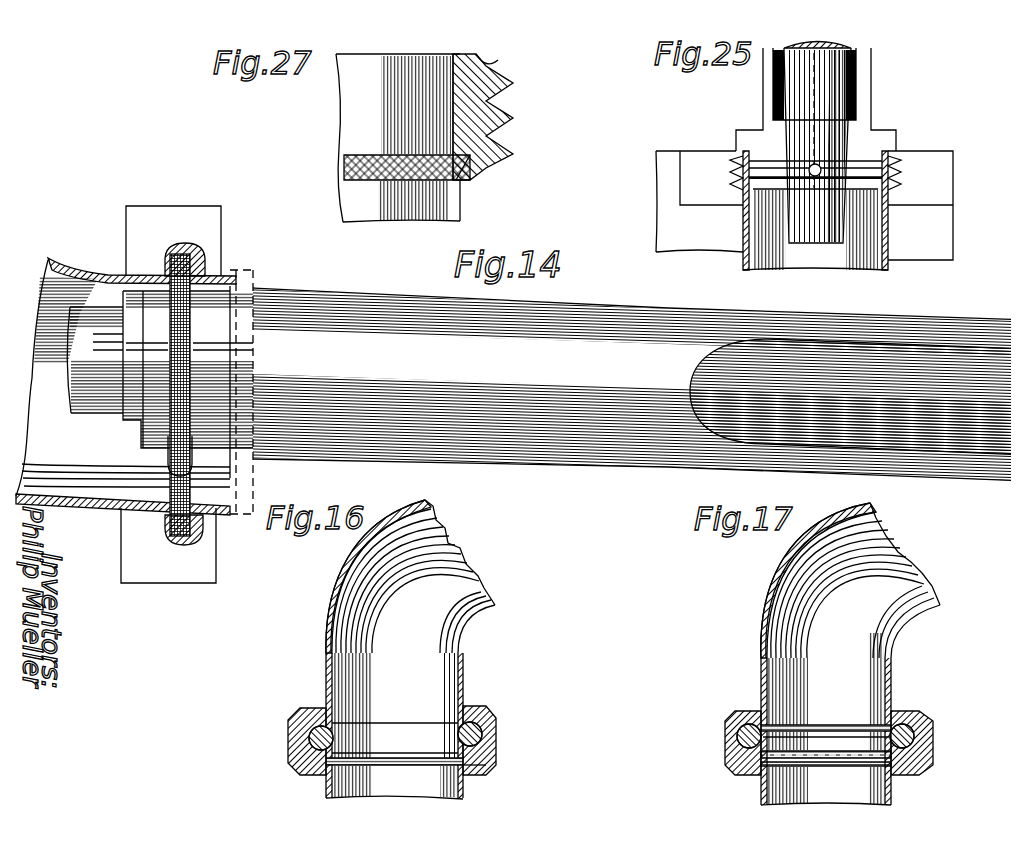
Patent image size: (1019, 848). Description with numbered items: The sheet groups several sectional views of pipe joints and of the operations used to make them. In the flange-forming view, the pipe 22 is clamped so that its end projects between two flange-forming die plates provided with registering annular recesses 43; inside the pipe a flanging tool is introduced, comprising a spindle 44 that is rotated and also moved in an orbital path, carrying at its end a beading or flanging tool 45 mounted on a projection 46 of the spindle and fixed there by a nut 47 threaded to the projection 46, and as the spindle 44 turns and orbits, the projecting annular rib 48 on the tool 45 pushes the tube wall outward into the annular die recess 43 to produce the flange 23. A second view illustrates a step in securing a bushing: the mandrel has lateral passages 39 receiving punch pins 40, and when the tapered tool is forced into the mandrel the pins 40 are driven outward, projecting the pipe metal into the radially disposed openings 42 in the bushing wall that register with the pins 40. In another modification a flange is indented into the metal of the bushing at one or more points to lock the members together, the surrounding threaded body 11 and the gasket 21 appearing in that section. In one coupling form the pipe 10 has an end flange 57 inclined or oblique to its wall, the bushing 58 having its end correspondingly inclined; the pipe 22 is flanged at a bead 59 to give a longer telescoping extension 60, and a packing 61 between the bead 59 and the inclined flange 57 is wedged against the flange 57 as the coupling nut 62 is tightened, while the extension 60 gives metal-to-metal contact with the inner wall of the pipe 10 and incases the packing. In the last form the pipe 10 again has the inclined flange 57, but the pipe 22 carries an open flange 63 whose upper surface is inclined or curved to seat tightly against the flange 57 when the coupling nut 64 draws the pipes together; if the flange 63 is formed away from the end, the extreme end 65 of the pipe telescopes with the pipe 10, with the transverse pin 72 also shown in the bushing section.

In FIG. 16, the pipe 10 is at (318, 780).
In FIG. 17, the pipe 10 is at (885, 781).
In FIG. 27, the threaded body 11 is at (472, 46).
In FIG. 27, the gasket 21 is at (462, 170).
In FIG. 14, the pipe 22 is at (64, 265).
In FIG. 16, the pipe 22 is at (430, 632).
In FIG. 17, the pipe 22 is at (905, 572).
In FIG. 14, the flange 23 is at (182, 537).
In FIG. 25, the lateral passages 39 is at (848, 150).
In FIG. 25, the punch pins 40 is at (750, 168).
In FIG. 14, the openings 42 is at (213, 230).
In FIG. 14, the annular recesses 43 is at (176, 236).
In FIG. 14, the spindle 44 is at (612, 300).
In FIG. 14, the flanging tool 45 is at (182, 342).
In FIG. 14, the projection 46 is at (195, 318).
In FIG. 14, the nut 47 is at (88, 406).
In FIG. 25, the nut 47 is at (810, 222).
In FIG. 14, the annular rib 48 is at (162, 460).
In FIG. 16, the end flange 57 is at (470, 738).
In FIG. 17, the end flange 57 is at (925, 742).
In FIG. 16, the bushing 58 is at (470, 765).
In FIG. 16, the flange or bead 59 is at (466, 712).
In FIG. 16, the telescoping extension 60 is at (318, 753).
In FIG. 16, the packing 61 is at (300, 726).
In FIG. 16, the coupling nut 62 is at (312, 700).
In FIG. 17, the open flange 63 is at (890, 720).
In FIG. 17, the coupling nut 64 is at (717, 744).
In FIG. 17, the extreme end 65 is at (752, 758).
In FIG. 25, the transverse pin 72 is at (890, 162).